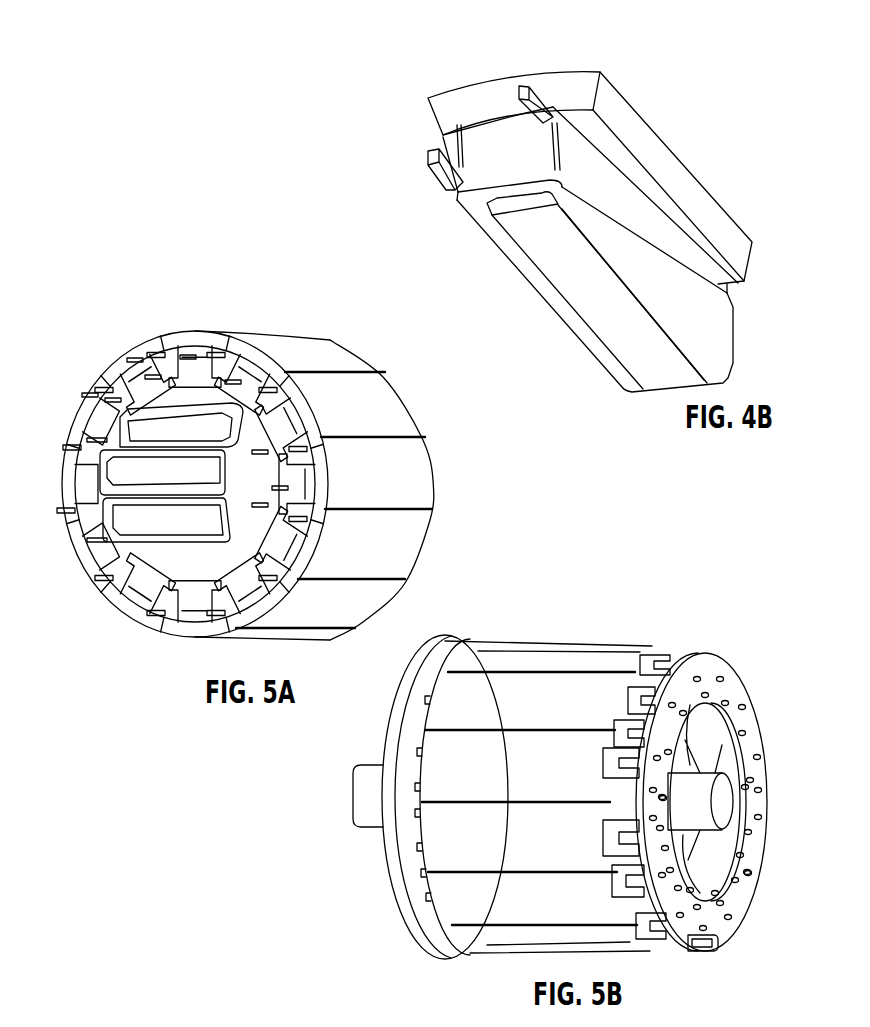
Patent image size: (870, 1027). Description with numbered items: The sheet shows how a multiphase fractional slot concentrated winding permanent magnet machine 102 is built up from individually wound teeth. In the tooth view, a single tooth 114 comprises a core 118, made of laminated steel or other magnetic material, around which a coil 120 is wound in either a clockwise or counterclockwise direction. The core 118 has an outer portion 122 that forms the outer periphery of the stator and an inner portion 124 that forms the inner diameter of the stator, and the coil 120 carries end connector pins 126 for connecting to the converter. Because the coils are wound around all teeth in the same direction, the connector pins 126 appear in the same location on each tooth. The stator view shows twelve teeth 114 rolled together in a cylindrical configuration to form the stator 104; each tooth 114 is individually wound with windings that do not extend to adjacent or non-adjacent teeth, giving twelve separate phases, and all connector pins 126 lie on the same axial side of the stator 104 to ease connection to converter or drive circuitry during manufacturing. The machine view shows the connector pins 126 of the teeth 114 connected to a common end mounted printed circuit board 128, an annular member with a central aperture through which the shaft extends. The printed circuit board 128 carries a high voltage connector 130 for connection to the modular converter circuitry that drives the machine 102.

In FIG. 5B, the fractional slot concentrated winding permanent magnet machine 102 is at (499, 634).
In FIG. 5A, the stator 104 is at (364, 336).
In FIG. 4B, the tooth 114 is at (405, 118).
In FIG. 5A, the tooth 114 is at (135, 380).
In FIG. 5B, the tooth 114 is at (662, 667).
In FIG. 4B, the core 118 is at (490, 205).
In FIG. 4B, the coil 120 is at (465, 207).
In FIG. 4B, the outer portion 122 is at (478, 88).
In FIG. 4B, the inner portion 124 is at (528, 210).
In FIG. 4B, the connector pins 126 is at (537, 90).
In FIG. 5A, the connector pins 126 is at (72, 437).
In FIG. 5B, the connector pins 126 is at (760, 817).
In FIG. 5B, the printed circuit board 128 is at (705, 673).
In FIG. 5B, the high voltage connector 130 is at (703, 950).